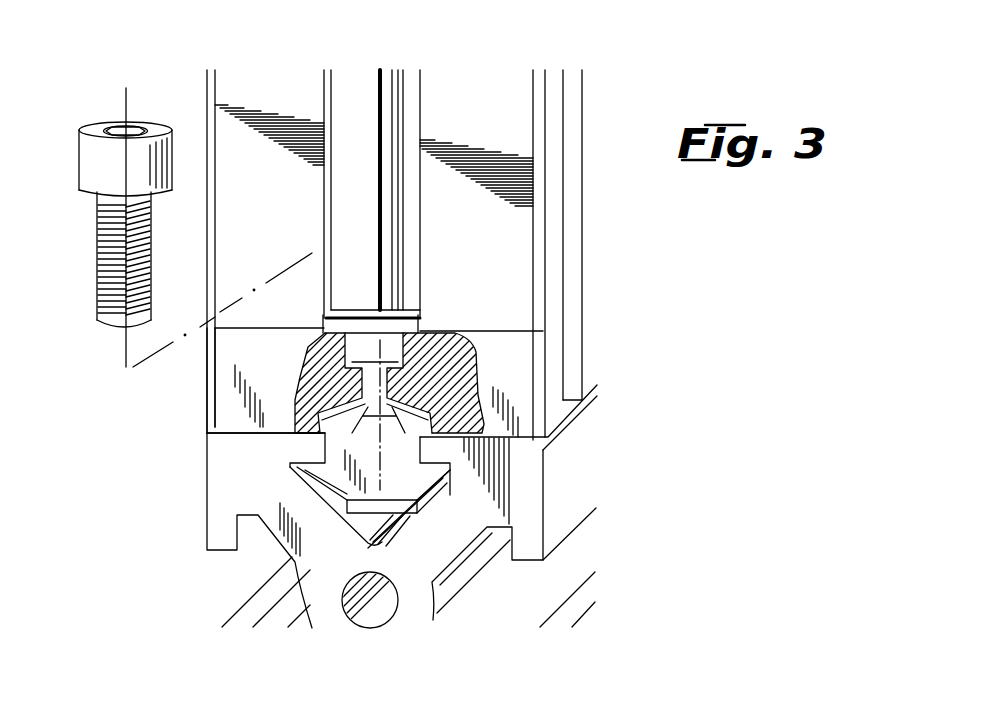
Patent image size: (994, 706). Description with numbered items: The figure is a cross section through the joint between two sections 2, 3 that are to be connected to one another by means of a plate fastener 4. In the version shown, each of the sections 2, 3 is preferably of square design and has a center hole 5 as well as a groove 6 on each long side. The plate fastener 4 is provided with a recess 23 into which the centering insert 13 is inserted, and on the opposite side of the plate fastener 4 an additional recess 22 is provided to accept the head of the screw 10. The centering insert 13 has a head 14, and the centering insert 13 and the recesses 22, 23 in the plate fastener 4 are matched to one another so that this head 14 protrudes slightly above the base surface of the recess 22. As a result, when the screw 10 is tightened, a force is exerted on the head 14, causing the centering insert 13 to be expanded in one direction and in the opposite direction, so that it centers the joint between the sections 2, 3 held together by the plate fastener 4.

The section 2 is at (510, 472).
The section 3 is at (517, 130).
The plate fastener 4 is at (237, 353).
The center hole 5 is at (372, 603).
The groove 6 is at (353, 115).
The screw 10 is at (92, 155).
The centering insert 13 is at (323, 432).
The head 14 is at (455, 372).
The recess 22 is at (393, 347).
The recess 23 is at (430, 415).